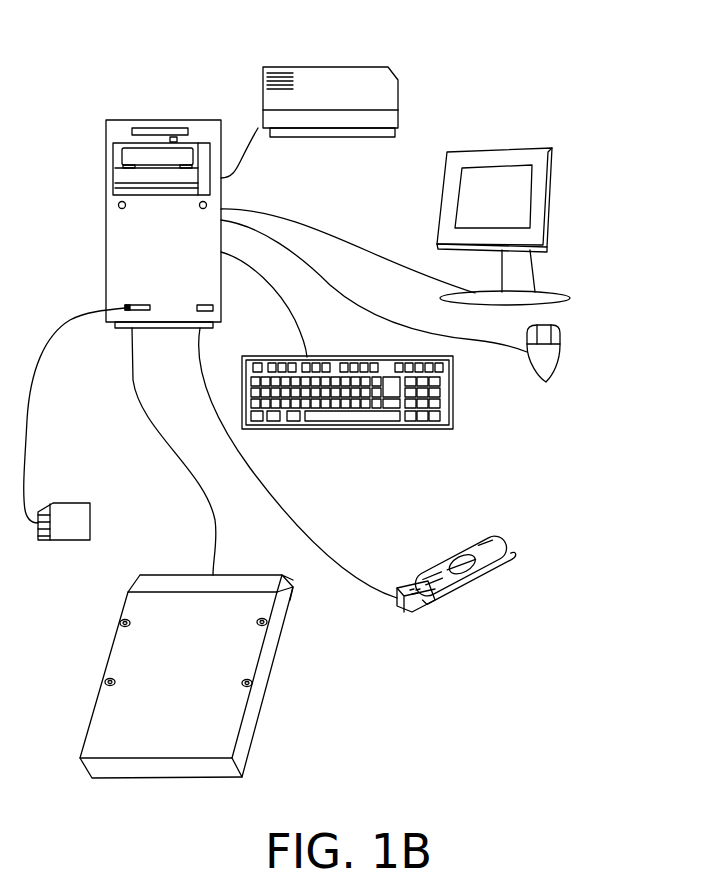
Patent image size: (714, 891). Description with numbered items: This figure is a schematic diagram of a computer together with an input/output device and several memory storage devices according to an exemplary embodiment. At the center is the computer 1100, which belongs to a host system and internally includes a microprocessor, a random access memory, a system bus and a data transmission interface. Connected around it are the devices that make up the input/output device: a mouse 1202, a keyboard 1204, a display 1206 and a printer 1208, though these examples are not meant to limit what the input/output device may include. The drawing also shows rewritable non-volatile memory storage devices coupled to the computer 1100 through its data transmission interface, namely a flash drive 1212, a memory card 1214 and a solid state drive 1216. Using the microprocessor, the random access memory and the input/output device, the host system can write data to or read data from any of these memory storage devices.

The computer 1100 is at (162, 120).
The mouse 1202 is at (562, 358).
The keyboard 1204 is at (455, 404).
The display 1206 is at (506, 145).
The printer 1208 is at (327, 67).
The flash drive 1212 is at (450, 556).
The memory card 1214 is at (90, 512).
The solid state drive 1216 is at (237, 567).